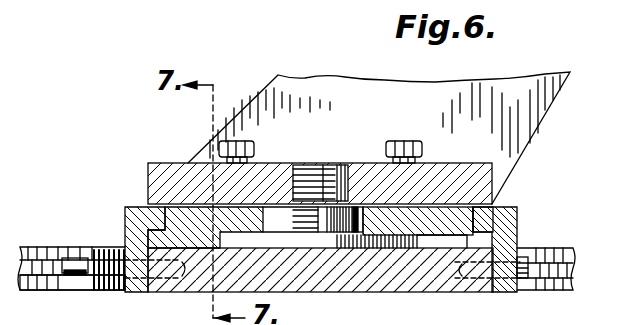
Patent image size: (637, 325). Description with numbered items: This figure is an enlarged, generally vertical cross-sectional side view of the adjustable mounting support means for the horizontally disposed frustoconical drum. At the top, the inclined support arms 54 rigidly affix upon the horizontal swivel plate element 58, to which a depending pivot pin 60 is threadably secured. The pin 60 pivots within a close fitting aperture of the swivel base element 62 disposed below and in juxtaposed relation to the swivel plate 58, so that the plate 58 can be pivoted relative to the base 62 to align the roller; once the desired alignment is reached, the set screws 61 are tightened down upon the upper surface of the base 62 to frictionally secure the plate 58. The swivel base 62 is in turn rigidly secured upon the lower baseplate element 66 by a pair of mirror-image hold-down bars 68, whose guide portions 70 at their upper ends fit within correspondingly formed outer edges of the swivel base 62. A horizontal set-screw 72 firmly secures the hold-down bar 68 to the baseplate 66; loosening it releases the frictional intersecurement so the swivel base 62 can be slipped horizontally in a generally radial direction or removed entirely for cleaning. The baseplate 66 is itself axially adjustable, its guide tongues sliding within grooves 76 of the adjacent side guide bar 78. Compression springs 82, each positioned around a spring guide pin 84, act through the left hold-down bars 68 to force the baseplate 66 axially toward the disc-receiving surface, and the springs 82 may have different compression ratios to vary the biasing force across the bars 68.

The support arms 54 is at (320, 86).
The swivel plate element 58 is at (440, 166).
The pivot pin 60 is at (350, 212).
The set screws 61 is at (243, 142).
The swivel base element 62 is at (185, 222).
The baseplate element 66 is at (338, 285).
The hold-down bars 68 is at (138, 206).
The guide portions 70 is at (476, 218).
The horizontal set-screws 72 is at (520, 279).
The grooves 76 is at (45, 270).
The side guide bar 78 is at (40, 248).
The compression springs 82 is at (96, 256).
The spring guide pin 84 is at (72, 280).